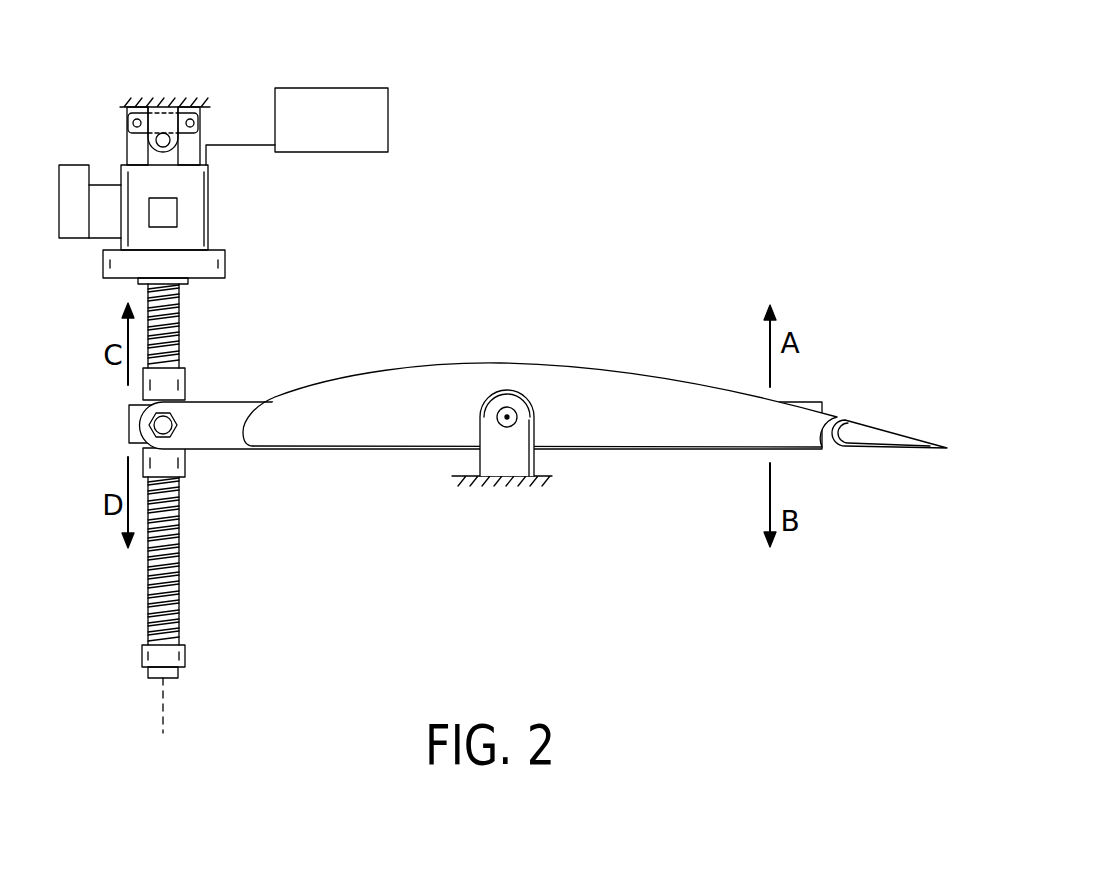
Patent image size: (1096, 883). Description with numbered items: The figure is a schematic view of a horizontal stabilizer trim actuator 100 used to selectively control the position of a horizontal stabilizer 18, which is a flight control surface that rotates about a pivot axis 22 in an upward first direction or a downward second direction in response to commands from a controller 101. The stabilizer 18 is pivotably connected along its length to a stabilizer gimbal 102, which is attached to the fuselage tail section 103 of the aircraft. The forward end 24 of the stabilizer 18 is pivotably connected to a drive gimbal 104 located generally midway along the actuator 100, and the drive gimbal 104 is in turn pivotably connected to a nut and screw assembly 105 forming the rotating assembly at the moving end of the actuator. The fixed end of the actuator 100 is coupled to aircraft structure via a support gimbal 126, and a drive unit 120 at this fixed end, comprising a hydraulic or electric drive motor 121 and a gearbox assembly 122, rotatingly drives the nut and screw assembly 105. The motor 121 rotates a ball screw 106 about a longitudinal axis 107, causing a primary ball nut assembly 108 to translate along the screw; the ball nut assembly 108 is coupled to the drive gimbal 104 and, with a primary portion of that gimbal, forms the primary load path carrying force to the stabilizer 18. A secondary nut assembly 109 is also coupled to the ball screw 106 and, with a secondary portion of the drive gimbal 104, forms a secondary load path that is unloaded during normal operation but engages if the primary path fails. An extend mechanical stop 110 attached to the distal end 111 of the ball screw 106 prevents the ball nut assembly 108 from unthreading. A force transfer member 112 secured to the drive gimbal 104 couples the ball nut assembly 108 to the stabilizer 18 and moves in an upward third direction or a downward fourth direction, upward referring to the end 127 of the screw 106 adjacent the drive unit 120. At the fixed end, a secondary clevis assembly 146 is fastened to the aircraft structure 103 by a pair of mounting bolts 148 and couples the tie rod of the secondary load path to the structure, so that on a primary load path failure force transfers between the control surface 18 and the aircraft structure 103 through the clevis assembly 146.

The horizontal stabilizer 18 is at (595, 365).
The pivot axis 22 is at (497, 418).
The forward end 24 is at (285, 410).
The horizontal stabilizer trim actuator 100 is at (160, 417).
The controller 101 is at (313, 134).
The stabilizer gimbal 102 is at (505, 439).
The fuselage tail section 103 is at (172, 107).
The drive gimbal 104 is at (127, 427).
The nut and screw assembly 105 is at (432, 430).
The ball screw 106 is at (148, 555).
The longitudinal axis 107 is at (165, 732).
The ball nut assembly 108 is at (177, 385).
The secondary nut assembly 109 is at (153, 458).
The extend mechanical stop 110 is at (142, 652).
The distal end 111 is at (183, 611).
The force transfer member 112 is at (217, 413).
The drive unit 120 is at (127, 185).
The drive motor 121 is at (72, 218).
The gearbox assembly 122 is at (105, 195).
The support gimbal 126 is at (179, 94).
The end of the screw 127 is at (196, 309).
The secondary clevis assembly 146 is at (202, 138).
The mounting bolts 148 is at (200, 128).